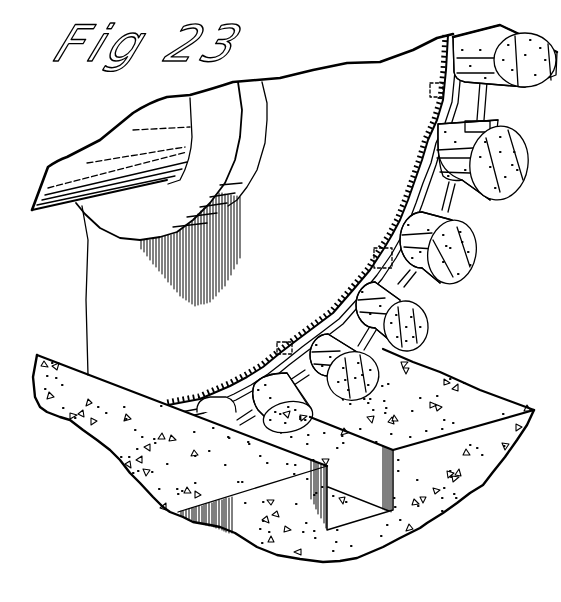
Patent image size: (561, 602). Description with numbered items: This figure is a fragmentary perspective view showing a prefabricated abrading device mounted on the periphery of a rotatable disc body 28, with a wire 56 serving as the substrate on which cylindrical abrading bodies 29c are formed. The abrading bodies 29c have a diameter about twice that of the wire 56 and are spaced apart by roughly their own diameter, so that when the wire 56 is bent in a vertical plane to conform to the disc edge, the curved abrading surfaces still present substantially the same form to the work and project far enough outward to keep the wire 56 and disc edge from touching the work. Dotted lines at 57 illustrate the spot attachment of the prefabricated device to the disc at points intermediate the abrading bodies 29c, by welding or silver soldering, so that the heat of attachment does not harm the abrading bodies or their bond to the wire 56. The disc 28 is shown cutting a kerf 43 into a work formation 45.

The cutting head shoe 28 is at (560, 341).
The roller cutter 29c is at (466, 247).
The kerf 43 is at (138, 370).
The rock formation 45 is at (452, 417).
The wire 56 is at (470, 103).
The spot attachment 57 is at (428, 90).